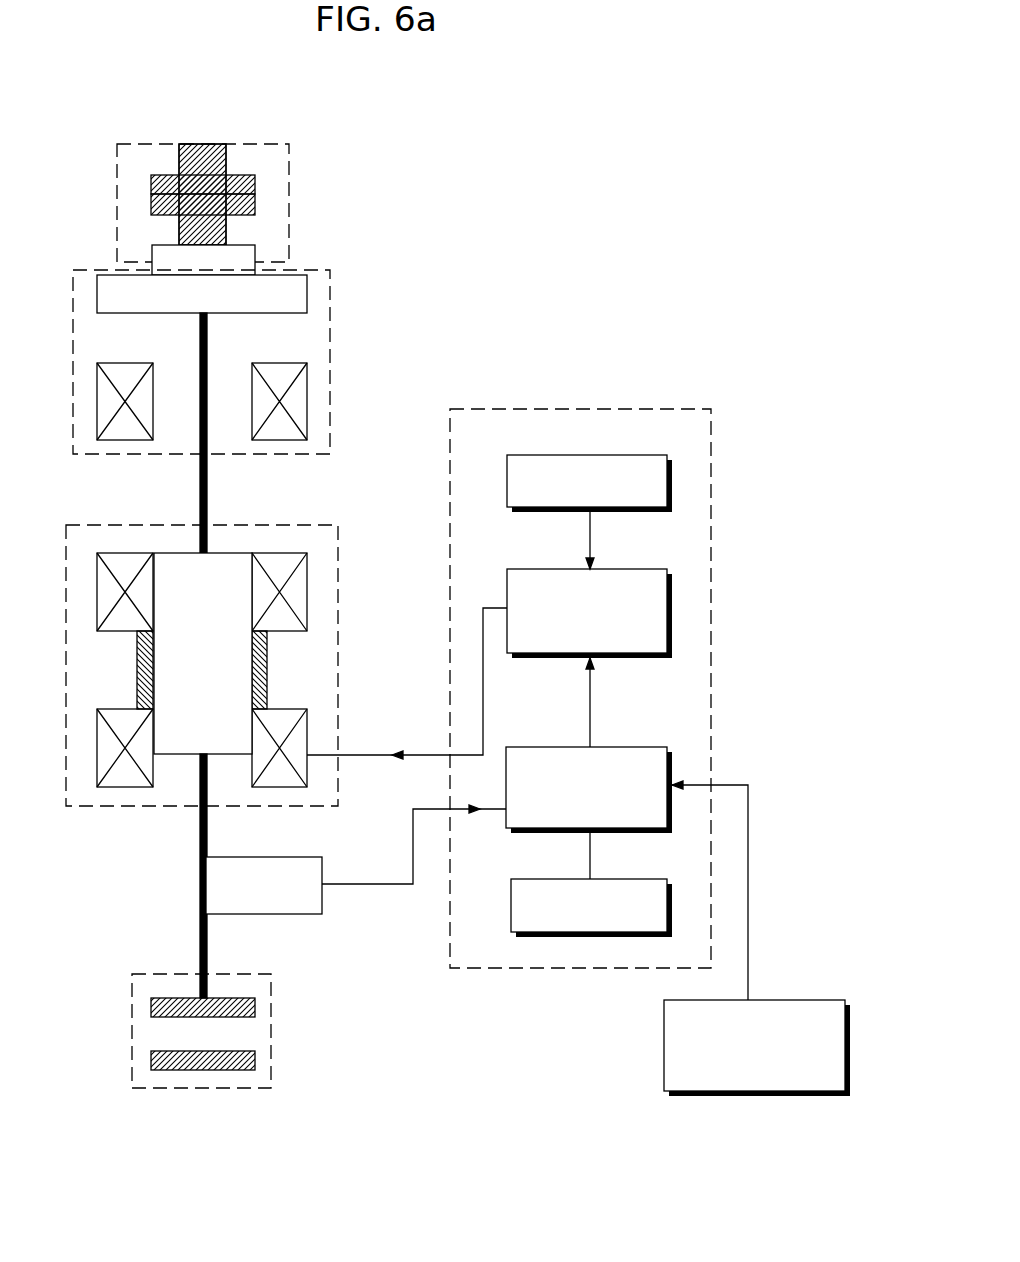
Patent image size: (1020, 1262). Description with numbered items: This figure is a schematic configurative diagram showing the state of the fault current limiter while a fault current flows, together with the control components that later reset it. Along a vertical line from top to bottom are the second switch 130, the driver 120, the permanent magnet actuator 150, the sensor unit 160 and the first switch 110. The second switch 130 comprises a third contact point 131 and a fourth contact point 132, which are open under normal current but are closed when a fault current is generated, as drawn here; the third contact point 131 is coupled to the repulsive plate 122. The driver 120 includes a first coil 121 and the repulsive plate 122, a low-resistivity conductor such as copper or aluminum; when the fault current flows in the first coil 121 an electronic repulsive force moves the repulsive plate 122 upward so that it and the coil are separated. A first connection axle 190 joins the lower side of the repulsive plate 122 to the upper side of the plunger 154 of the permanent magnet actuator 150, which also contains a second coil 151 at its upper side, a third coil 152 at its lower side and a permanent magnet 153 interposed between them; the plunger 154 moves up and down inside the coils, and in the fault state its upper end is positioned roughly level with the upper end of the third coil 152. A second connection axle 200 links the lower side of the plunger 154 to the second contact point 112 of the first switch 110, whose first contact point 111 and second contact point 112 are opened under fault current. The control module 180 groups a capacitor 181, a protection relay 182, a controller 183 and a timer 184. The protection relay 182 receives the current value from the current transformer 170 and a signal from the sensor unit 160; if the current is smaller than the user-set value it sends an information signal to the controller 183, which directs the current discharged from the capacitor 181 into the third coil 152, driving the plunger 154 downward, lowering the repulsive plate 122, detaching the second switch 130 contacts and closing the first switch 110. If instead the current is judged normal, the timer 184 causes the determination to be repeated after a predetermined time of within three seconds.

The first switch 110 is at (183, 1088).
The first contact point 111 is at (255, 1062).
The second contact point 112 is at (255, 1002).
The driver 120 is at (325, 270).
The first coil 121 is at (307, 413).
The repulsive plate 122 is at (307, 288).
The second switch 130 is at (290, 153).
The third contact point 131 is at (151, 203).
The fourth contact point 132 is at (151, 185).
The permanent magnet actuator 150 is at (300, 525).
The second coil 151 is at (307, 565).
The third coil 152 is at (307, 730).
The permanent magnet 153 is at (267, 660).
The plunger 154 is at (172, 748).
The sensor unit 160 is at (293, 857).
The current transformer 170 is at (664, 1025).
The control module 180 is at (486, 409).
The capacitor 181 is at (635, 455).
The protection relay 182 is at (635, 747).
The controller 183 is at (635, 569).
The timer 184 is at (635, 879).
The first connection axle 190 is at (200, 490).
The second connection axle 200 is at (200, 935).